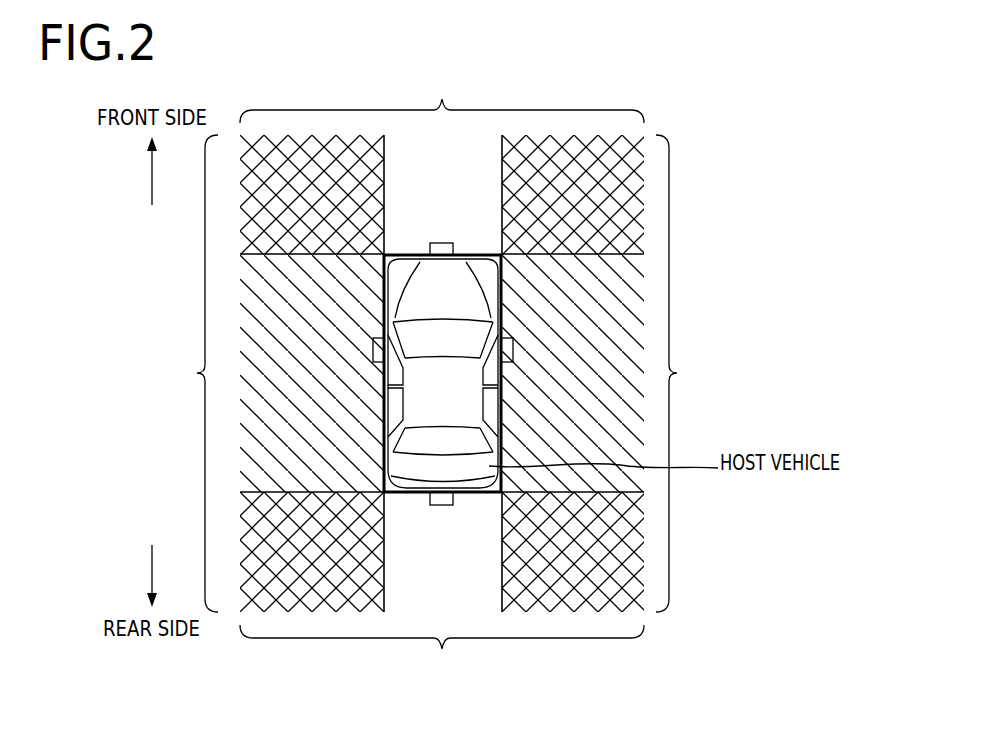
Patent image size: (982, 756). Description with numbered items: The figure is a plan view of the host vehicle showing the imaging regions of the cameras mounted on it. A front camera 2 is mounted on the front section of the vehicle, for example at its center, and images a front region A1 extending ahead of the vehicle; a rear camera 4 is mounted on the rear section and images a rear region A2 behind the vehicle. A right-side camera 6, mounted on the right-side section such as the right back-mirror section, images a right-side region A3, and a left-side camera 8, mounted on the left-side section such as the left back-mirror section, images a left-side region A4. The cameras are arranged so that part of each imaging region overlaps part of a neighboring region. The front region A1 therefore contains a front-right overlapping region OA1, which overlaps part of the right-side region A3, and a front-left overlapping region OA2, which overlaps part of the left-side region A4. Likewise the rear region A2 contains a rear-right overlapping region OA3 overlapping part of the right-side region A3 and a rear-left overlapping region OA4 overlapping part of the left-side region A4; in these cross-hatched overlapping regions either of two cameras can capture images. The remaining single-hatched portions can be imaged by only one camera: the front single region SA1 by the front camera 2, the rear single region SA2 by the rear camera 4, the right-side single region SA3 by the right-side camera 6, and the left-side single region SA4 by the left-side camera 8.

The front camera 2 is at (441, 243).
The rear camera 4 is at (441, 505).
The right-side camera 6 is at (513, 346).
The left-side camera 8 is at (373, 347).
The front region A1 is at (442, 98).
The rear region A2 is at (442, 649).
The right-side region A3 is at (682, 373).
The left-side region A4 is at (196, 373).
The front single region SA1 is at (410, 168).
The rear single region SA2 is at (407, 577).
The right-side single region SA3 is at (607, 410).
The left-side single region SA4 is at (270, 441).
The front-right overlapping region OA1 is at (607, 178).
The front-left overlapping region OA2 is at (297, 167).
The rear-right overlapping region OA3 is at (600, 578).
The rear-left overlapping region OA4 is at (288, 577).